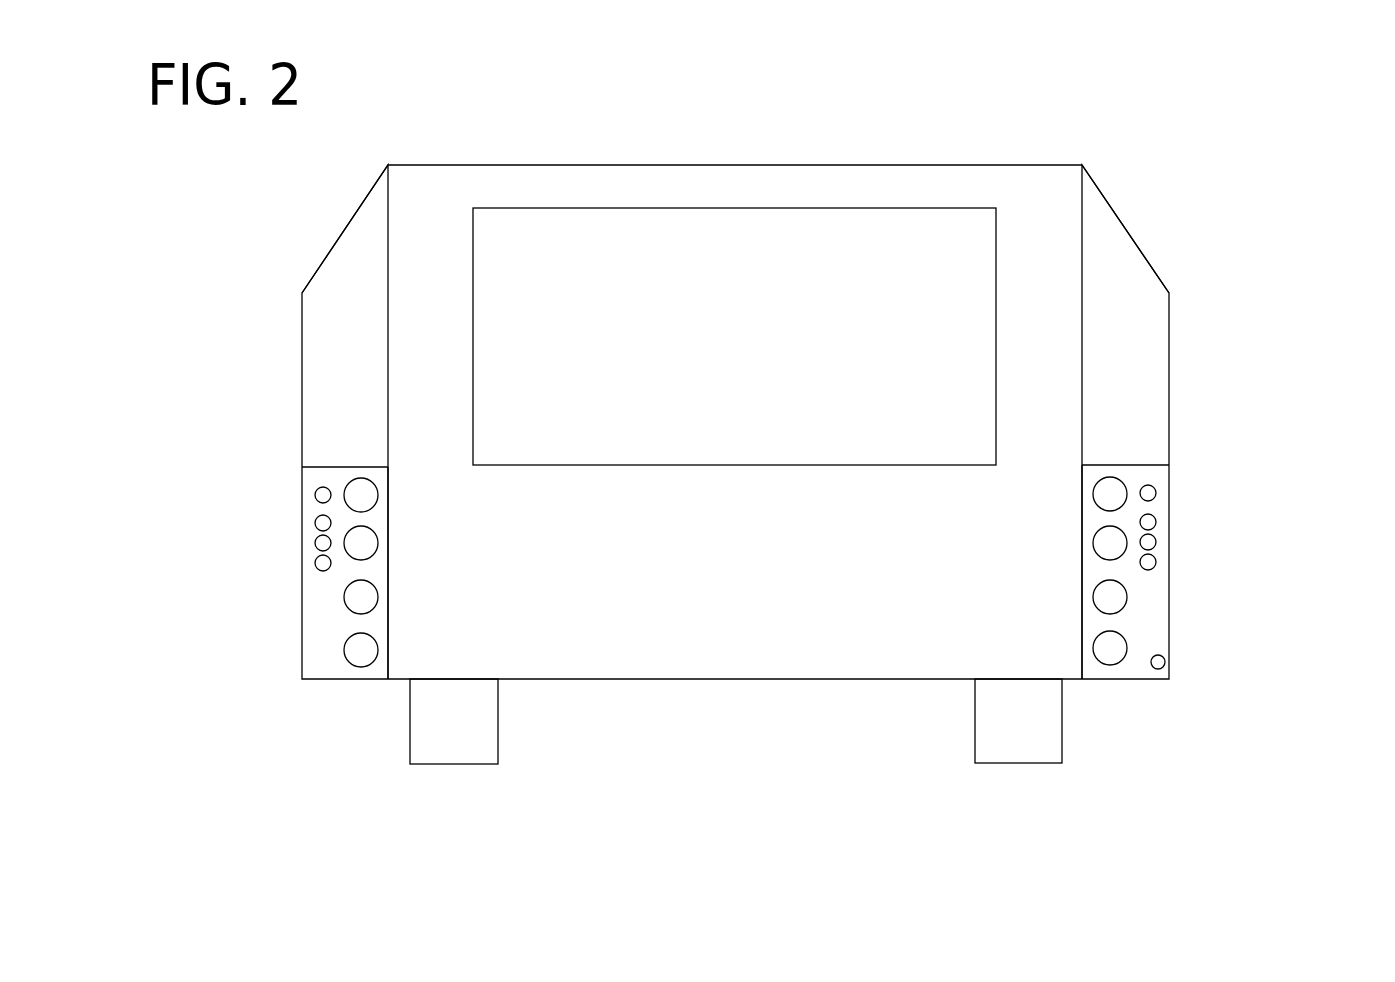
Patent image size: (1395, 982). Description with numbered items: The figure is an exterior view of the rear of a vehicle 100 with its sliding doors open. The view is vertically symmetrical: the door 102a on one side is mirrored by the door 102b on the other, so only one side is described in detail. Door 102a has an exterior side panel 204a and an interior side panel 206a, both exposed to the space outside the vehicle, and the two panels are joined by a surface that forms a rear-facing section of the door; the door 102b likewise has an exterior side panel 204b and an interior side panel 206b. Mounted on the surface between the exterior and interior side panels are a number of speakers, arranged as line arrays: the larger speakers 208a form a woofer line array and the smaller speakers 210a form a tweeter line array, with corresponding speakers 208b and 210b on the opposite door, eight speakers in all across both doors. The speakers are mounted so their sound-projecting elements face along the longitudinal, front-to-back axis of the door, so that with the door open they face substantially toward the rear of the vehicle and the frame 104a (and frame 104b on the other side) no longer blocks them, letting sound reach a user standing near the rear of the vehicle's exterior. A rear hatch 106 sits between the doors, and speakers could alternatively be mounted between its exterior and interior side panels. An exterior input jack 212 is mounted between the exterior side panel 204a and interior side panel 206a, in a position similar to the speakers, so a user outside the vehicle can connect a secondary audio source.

The handheld electronic device 100 is at (772, 112).
The door 102a is at (1112, 293).
The door 102b is at (338, 296).
The frame 104a is at (1063, 606).
The left handle region 104b is at (400, 603).
The rear hatch 106 is at (718, 618).
The exterior side panel 204a is at (1167, 631).
The left control panel 204b is at (302, 642).
The interior side panel 206a is at (1083, 662).
The left support foot 206b is at (402, 648).
The speakers 208a is at (1108, 650).
The left large buttons 208b is at (372, 653).
The speakers 210a is at (1148, 562).
The left small buttons 210b is at (323, 563).
The input jack 212 is at (1151, 670).